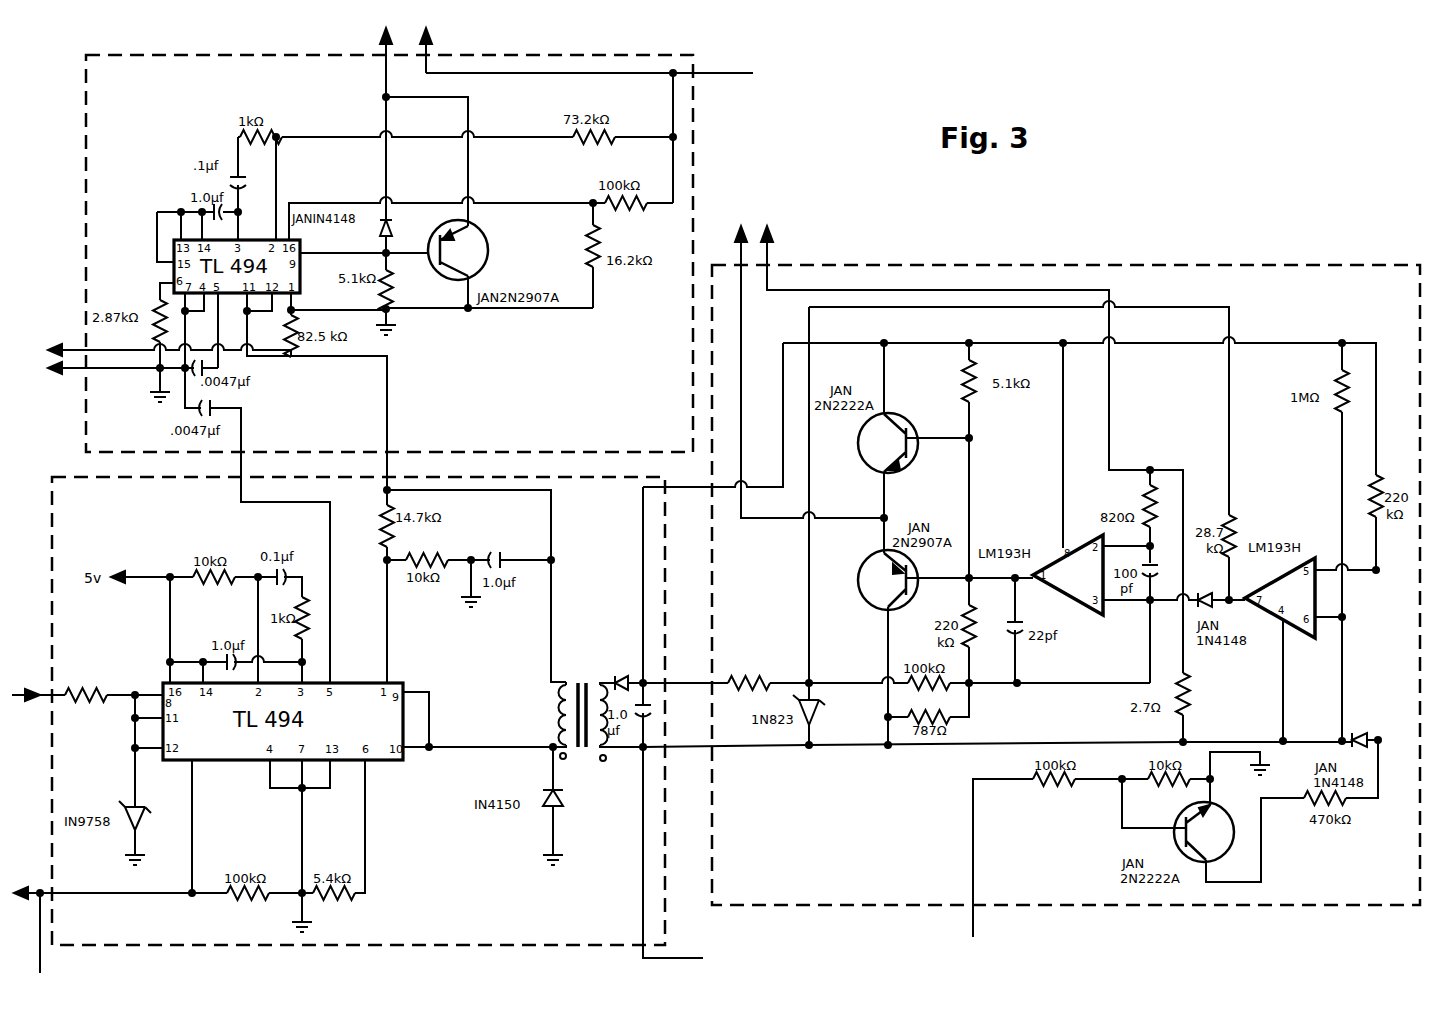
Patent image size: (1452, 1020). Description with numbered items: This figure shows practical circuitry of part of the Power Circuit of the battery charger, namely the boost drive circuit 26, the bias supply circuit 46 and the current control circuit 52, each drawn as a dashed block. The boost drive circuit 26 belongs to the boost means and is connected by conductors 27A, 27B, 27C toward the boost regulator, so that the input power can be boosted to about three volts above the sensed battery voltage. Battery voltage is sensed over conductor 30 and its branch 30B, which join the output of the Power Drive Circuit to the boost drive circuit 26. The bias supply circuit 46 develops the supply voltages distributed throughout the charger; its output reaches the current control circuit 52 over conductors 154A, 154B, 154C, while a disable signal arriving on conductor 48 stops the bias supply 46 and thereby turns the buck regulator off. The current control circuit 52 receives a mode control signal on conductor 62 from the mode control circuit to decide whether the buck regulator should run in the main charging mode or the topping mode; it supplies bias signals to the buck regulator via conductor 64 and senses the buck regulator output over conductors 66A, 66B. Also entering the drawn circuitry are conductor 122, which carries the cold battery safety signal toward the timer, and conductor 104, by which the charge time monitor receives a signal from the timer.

The boost drive circuit 26 is at (693, 196).
The conductor 27A is at (386, 90).
The conductor 27B is at (75, 340).
The conductor 27C is at (52, 352).
The conductor 30 is at (430, 52).
The conductor 30B is at (722, 73).
The bias supply circuit 46 is at (472, 945).
The conductor 48 is at (118, 896).
The current control circuit 52 is at (822, 908).
The conductor 62 is at (972, 916).
The conductor 64 is at (742, 312).
The conductor 66A is at (718, 944).
The conductor 66B is at (770, 292).
The conductor 104 is at (40, 968).
The conductor 122 is at (28, 690).
The conductor 154A is at (652, 488).
The conductor 154B is at (672, 683).
The conductor 154C is at (676, 748).